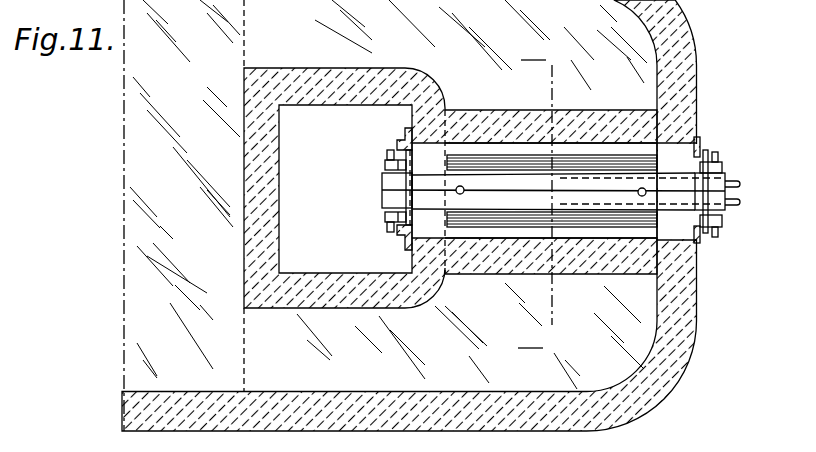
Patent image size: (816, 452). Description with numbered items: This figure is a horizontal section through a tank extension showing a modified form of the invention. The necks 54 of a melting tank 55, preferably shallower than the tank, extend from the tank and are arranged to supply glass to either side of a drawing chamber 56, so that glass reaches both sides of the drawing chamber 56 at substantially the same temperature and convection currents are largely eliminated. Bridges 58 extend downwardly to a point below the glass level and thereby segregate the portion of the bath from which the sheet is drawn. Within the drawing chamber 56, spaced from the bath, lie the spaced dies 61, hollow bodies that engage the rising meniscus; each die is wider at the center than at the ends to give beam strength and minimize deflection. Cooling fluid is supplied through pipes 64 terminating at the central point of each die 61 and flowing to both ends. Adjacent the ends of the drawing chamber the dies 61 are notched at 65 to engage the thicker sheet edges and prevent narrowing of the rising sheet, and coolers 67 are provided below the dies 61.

The necks 54 is at (318, 14).
The melting tank 55 is at (124, 221).
The drawing chamber 56 is at (594, 147).
The bridges 58 is at (519, 123).
The dies 61 is at (553, 193).
The pipes 64 is at (745, 201).
The notches 65 is at (457, 193).
The coolers 67 is at (497, 227).